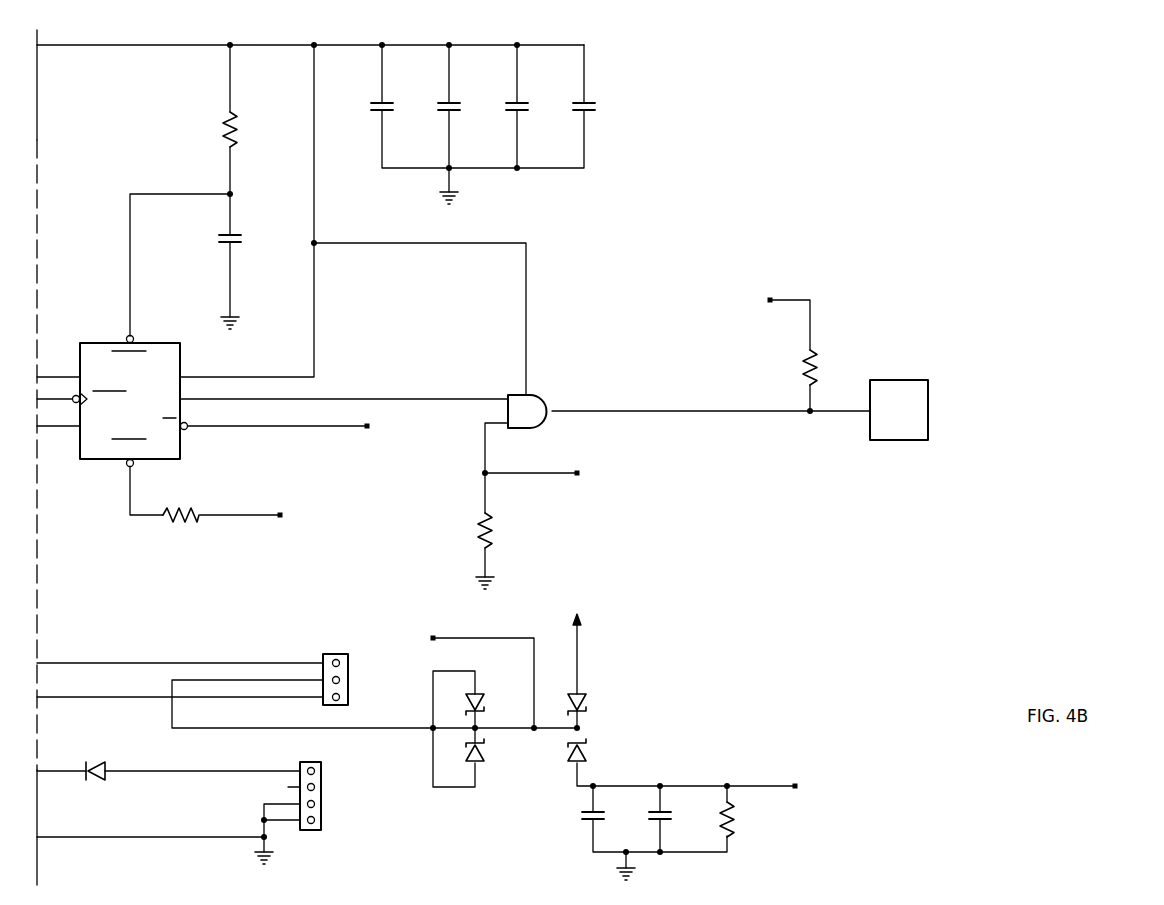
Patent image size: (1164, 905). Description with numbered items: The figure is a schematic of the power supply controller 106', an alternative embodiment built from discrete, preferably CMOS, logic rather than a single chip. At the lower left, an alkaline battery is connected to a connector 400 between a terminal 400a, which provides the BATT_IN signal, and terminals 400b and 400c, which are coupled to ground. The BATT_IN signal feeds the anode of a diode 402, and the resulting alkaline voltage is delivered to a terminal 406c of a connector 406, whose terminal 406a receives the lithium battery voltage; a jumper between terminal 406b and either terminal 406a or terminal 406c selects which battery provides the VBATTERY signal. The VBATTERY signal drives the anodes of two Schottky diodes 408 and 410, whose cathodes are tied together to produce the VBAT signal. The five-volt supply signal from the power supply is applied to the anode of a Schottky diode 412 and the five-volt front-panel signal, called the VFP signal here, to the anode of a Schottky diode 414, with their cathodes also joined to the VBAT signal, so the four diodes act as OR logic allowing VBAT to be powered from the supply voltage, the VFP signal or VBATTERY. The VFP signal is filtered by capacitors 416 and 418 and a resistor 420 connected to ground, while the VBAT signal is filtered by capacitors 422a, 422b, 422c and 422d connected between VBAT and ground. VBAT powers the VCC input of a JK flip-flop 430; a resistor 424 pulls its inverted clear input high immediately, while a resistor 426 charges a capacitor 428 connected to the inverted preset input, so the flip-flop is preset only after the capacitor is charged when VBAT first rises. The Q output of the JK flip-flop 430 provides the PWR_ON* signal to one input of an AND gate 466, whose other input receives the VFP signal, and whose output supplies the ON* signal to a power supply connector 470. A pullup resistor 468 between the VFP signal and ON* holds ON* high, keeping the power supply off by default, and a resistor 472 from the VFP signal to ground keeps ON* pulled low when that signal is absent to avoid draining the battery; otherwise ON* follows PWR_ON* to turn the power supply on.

The power supply controller 106' is at (509, 457).
The connector 400 is at (343, 809).
The terminal 400a is at (321, 769).
The terminal 400b is at (321, 787).
The terminal 400c is at (321, 812).
The diode 402 is at (95, 761).
The connector 406 is at (368, 667).
The terminal 406a is at (348, 663).
The terminal 406b is at (348, 680).
The terminal 406c is at (348, 697).
The Schottky diode 408 is at (484, 709).
The Schottky diode 410 is at (486, 752).
The Schottky diode 412 is at (586, 709).
The Schottky diode 414 is at (588, 752).
The capacitor 416 is at (580, 814).
The capacitor 418 is at (668, 815).
The resistor 420 is at (736, 821).
The capacitor 422a is at (388, 104).
The capacitor 422b is at (455, 104).
The capacitor 422c is at (522, 104).
The capacitor 422d is at (589, 104).
The resistor 424 is at (174, 524).
The resistor 426 is at (238, 122).
The capacitor 428 is at (241, 241).
The JK flip-flop 430 is at (90, 340).
The AND gate 466 is at (516, 392).
The pullup resistor 468 is at (820, 358).
The power supply connector 470 is at (928, 390).
The resistor 472 is at (496, 531).